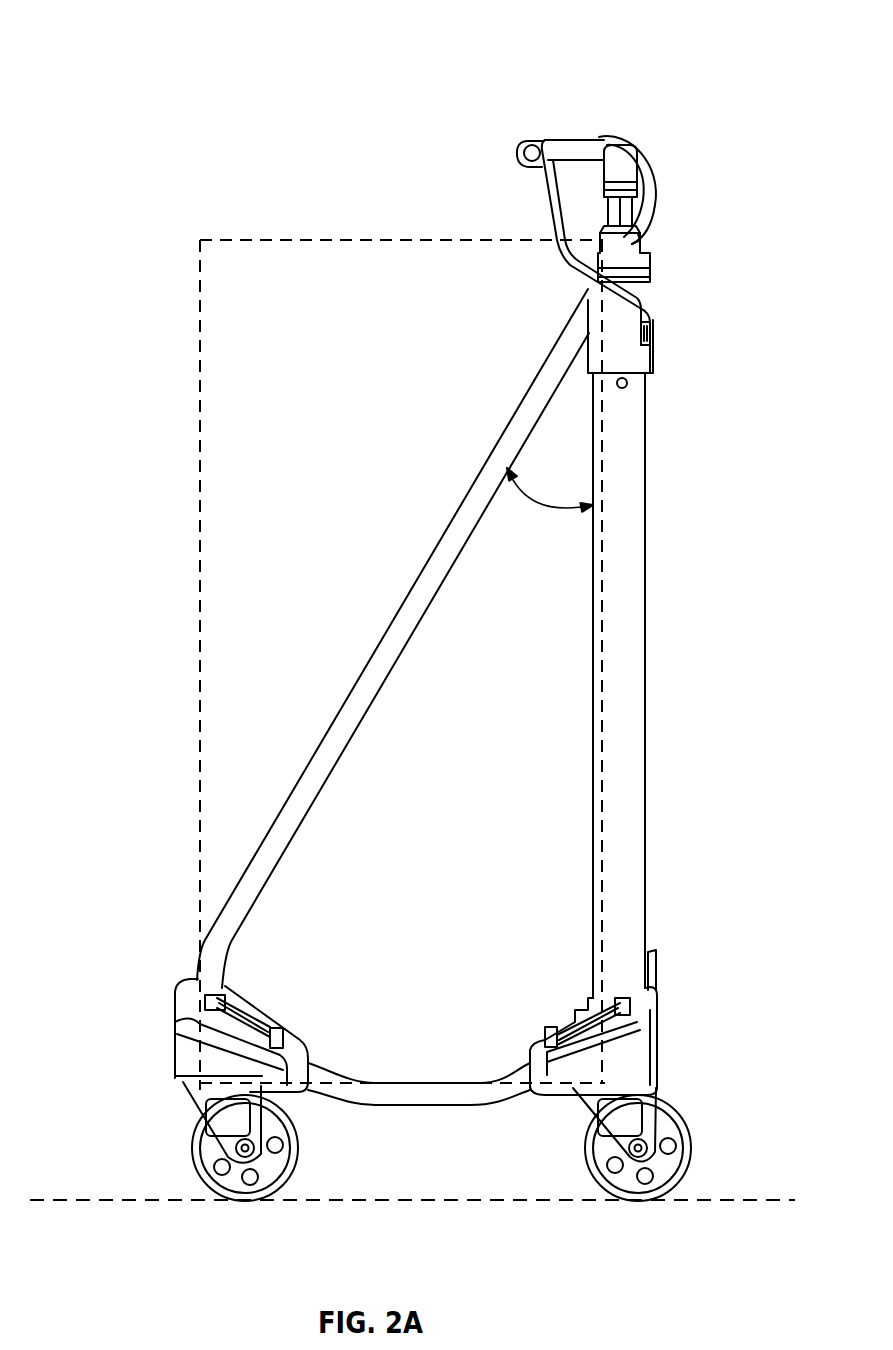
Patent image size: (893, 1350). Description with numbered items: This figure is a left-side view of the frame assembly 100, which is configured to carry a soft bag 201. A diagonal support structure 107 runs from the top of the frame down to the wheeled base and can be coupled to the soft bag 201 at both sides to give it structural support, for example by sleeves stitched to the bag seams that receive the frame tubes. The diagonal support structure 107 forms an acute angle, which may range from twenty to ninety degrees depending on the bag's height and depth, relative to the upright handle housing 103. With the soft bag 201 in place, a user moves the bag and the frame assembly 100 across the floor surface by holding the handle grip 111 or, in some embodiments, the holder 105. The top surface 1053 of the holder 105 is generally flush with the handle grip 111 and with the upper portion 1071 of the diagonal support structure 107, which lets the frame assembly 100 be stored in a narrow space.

The frame assembly 100 is at (683, 28).
The top surface of the holder 1053 is at (526, 145).
The upper portion of the diagonal support structure 1071 is at (570, 137).
The handle grip 111 is at (623, 170).
The holder 105 is at (550, 198).
The handle housing 103 is at (636, 602).
The diagonal support structure 107 is at (404, 620).
The soft bag 201 is at (200, 632).